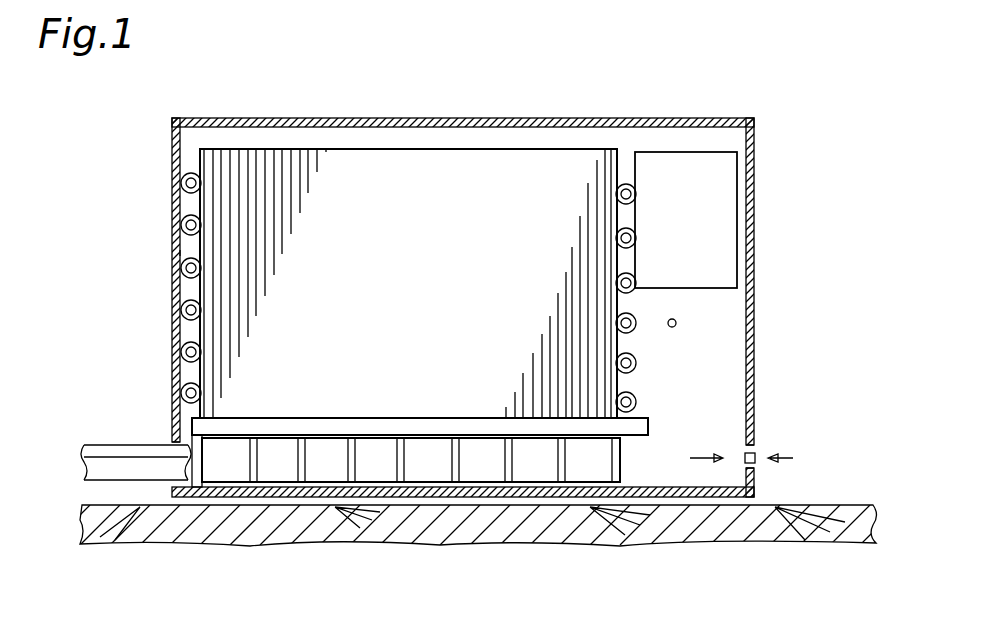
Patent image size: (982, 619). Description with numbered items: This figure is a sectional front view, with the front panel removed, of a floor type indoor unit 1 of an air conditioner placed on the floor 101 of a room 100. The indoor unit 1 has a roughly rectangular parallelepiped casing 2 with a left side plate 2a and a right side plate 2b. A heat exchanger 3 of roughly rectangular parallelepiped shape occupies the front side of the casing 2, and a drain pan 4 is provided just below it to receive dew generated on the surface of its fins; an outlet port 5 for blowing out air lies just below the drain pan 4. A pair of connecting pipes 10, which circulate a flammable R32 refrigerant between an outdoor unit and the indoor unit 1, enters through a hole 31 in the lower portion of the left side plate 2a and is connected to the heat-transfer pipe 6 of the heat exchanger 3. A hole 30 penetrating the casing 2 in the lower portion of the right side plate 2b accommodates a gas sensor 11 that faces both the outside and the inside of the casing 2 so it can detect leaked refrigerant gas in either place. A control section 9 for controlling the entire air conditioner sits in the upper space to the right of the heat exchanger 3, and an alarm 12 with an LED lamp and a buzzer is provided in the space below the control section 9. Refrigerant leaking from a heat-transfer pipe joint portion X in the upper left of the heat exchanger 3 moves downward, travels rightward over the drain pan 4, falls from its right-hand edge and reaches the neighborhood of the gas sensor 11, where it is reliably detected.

The indoor unit 1 is at (147, 133).
The casing 2 is at (280, 118).
The left side plate 2a is at (180, 336).
The right side plate 2b is at (754, 334).
The heat exchanger 3 is at (404, 148).
The drain pan 4 is at (377, 418).
The outlet port 5 is at (322, 470).
The heat-transfer pipe 6 is at (190, 183).
The control section 9 is at (730, 231).
The connecting pipes 10 is at (100, 444).
The gas sensor 11 is at (745, 455).
The alarm 12 is at (676, 327).
The hole 30 is at (757, 447).
The hole 31 is at (172, 442).
The room 100 is at (843, 117).
The floor 101 is at (815, 515).
The heat-transfer pipe joint portion X is at (186, 253).